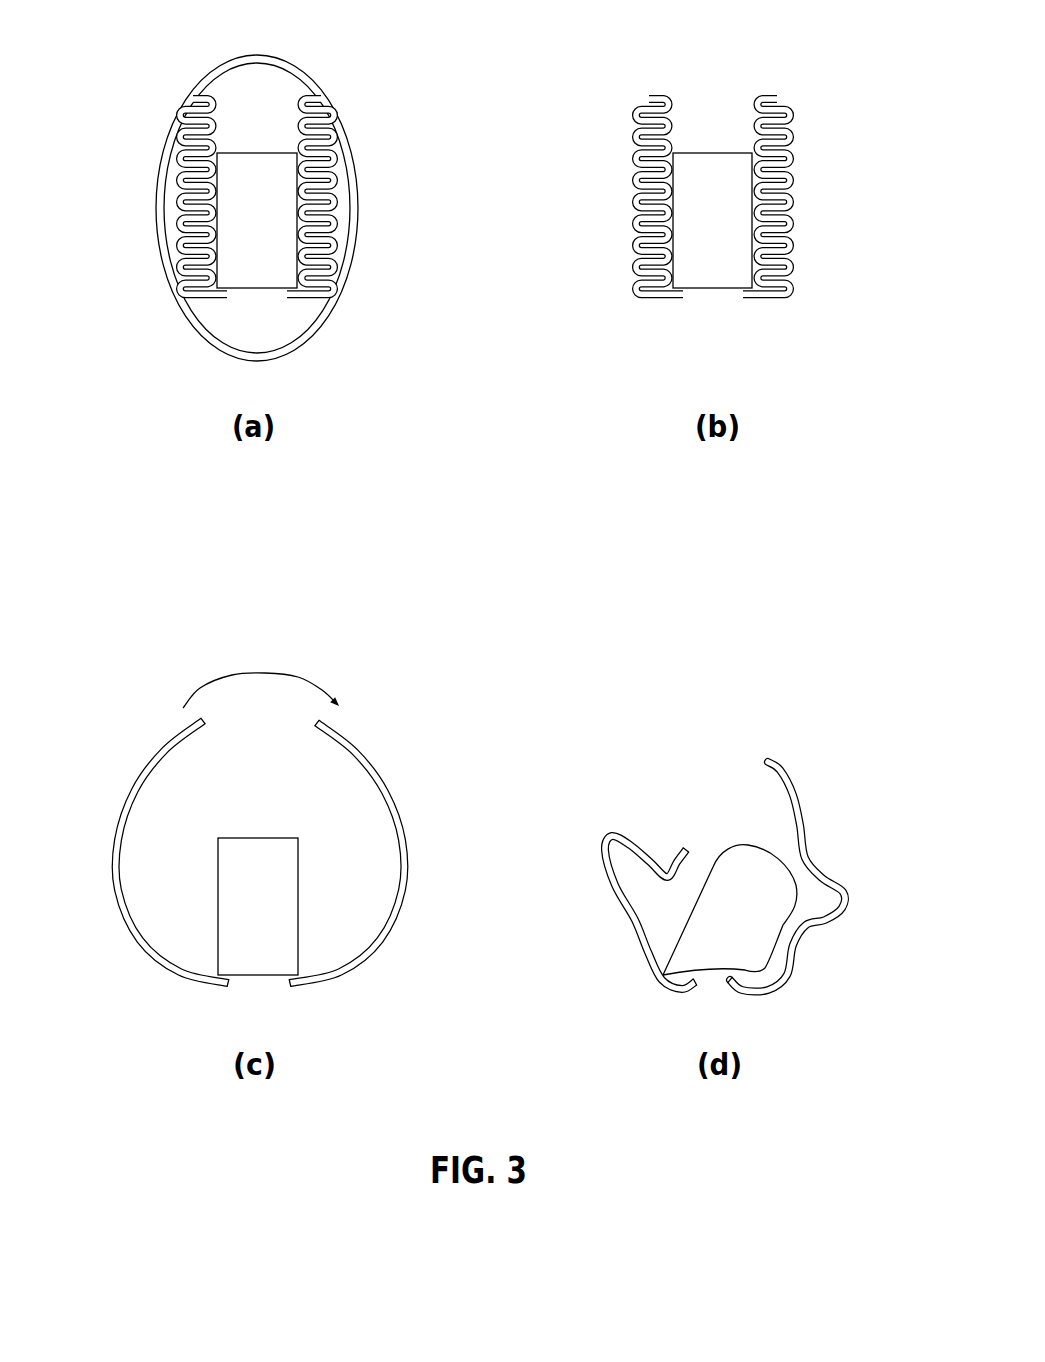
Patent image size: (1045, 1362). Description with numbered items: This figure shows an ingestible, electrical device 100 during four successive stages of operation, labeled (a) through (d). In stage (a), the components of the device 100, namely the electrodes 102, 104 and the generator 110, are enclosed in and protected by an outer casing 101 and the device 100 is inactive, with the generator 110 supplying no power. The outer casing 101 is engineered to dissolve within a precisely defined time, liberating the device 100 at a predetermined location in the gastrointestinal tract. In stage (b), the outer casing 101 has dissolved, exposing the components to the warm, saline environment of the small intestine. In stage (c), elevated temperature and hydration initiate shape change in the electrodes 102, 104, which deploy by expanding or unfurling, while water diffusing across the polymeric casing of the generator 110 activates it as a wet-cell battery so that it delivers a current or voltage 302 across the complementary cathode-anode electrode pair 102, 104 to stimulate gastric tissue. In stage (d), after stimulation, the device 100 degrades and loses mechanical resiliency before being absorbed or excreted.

The ingestible, electrical device 100 is at (159, 52).
The outer casing 101 is at (247, 62).
The electrode 102 is at (190, 137).
The electrode 104 is at (333, 137).
The generator 110 is at (277, 160).
The current, voltage, or both 302 is at (262, 673).